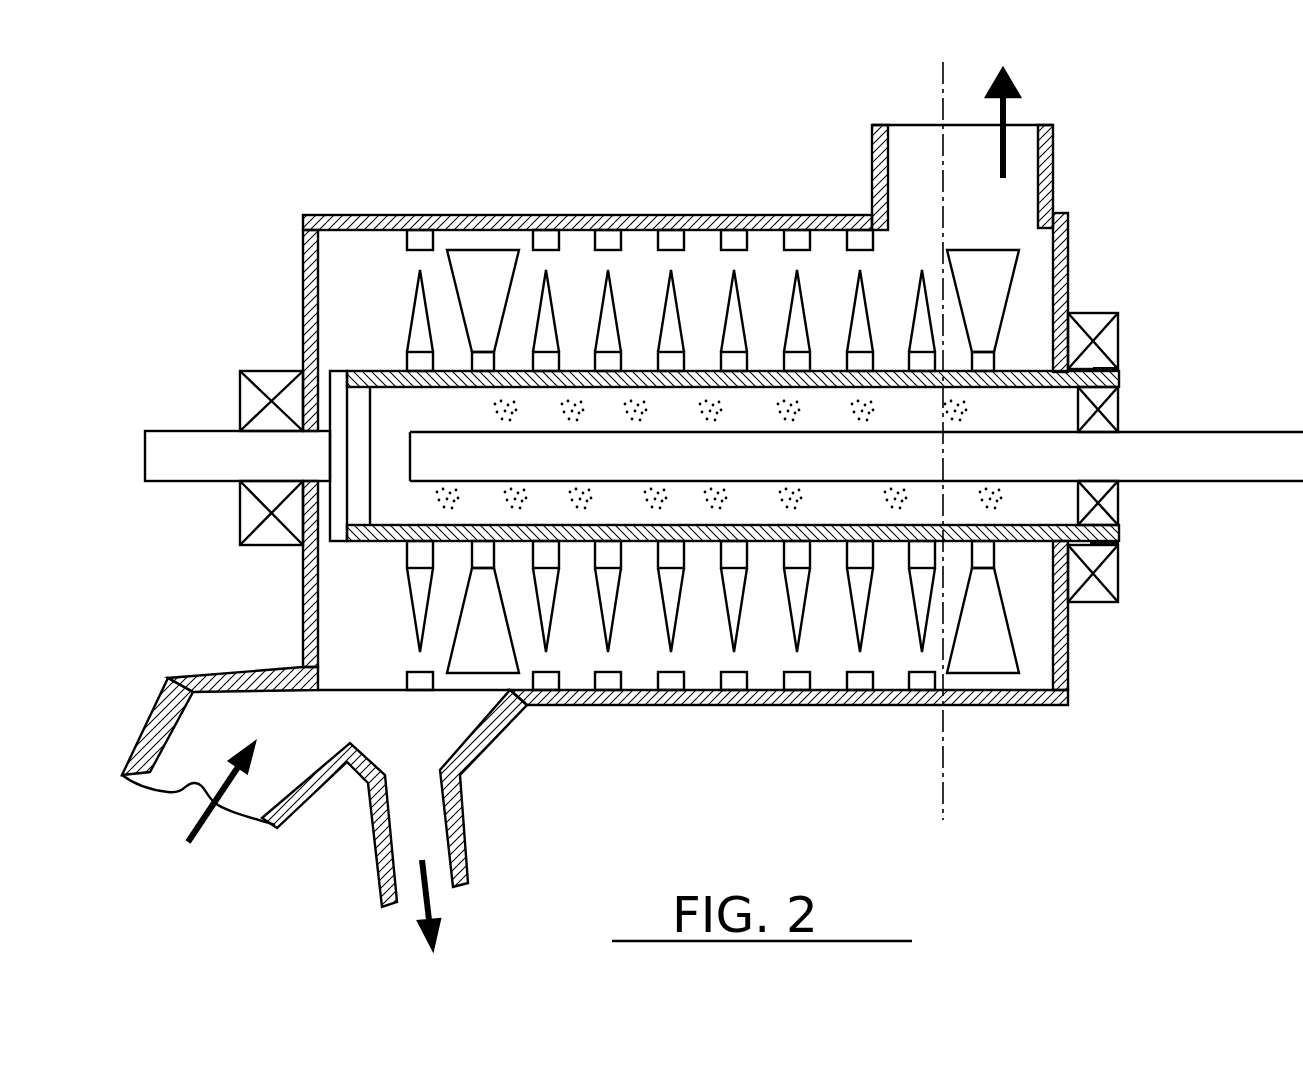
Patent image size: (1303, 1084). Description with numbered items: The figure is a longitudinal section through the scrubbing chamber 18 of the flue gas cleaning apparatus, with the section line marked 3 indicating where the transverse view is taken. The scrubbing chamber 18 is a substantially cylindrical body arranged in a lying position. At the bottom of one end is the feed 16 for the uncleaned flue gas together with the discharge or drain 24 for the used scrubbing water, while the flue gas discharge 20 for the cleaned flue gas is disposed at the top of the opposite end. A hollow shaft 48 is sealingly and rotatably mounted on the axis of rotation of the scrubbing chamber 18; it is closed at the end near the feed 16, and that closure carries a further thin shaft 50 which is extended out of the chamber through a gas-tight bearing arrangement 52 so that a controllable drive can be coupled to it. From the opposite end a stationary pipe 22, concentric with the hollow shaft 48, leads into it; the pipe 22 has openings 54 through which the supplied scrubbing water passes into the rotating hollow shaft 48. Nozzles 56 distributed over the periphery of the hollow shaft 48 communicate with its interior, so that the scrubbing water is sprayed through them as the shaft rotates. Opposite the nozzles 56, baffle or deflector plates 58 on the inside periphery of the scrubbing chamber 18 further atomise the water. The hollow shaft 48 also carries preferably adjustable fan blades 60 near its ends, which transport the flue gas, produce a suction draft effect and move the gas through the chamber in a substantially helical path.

The feed 16 is at (247, 718).
The scrubbing chamber 18 is at (377, 207).
The flue gas discharge 20 is at (1025, 160).
The pipe 22 is at (1200, 457).
The discharge or drain 24 is at (443, 850).
The hollow shaft 48 is at (1017, 370).
The thin shaft 50 is at (188, 437).
The gas-tight bearing arrangement 52 is at (272, 390).
The openings 54 is at (648, 490).
The nozzles 56 is at (862, 602).
The baffle or deflector plates 58 is at (732, 678).
The fan blades 60 is at (987, 637).
The section line 3- 3 is at (905, 93).